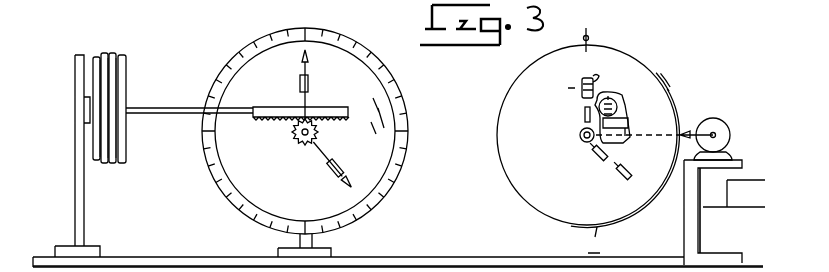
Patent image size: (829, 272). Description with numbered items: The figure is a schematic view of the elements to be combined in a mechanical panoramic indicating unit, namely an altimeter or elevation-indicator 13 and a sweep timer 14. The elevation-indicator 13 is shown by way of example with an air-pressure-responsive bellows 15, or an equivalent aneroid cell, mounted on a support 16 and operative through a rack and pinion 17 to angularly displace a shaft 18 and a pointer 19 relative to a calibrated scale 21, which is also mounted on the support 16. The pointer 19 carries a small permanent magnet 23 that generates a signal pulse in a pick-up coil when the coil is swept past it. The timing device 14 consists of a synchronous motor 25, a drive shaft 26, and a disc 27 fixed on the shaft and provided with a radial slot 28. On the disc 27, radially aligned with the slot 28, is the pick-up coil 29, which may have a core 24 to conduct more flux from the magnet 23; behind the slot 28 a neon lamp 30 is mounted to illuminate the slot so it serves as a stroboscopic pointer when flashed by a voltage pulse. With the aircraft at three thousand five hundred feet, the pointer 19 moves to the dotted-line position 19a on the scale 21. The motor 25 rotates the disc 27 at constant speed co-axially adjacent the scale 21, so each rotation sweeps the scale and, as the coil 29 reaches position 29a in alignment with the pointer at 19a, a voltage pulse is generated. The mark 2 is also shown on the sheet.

The disc index mark 2 is at (594, 240).
The elevation-indicator 13 is at (177, 214).
The sweep timer 14 is at (655, 241).
The air-pressure-responsive bellows 15 is at (127, 68).
The support 16 is at (117, 257).
The rack and pinion 17 is at (293, 141).
The shaft 18 is at (308, 146).
The pointer 19 is at (306, 62).
The dotted-line position of pointer 19a is at (320, 143).
The calibrated scale 21 is at (387, 70).
The permanent magnet 23 is at (300, 79).
The core 24 is at (596, 82).
The synchronous motor 25 is at (717, 120).
The drive shaft 26 is at (655, 127).
The disc 27 is at (656, 74).
The radial slot 28 is at (584, 109).
The pick-up coil 29 is at (581, 84).
The position of pick-up coil 29a is at (616, 171).
The neon lamp 30 is at (614, 112).